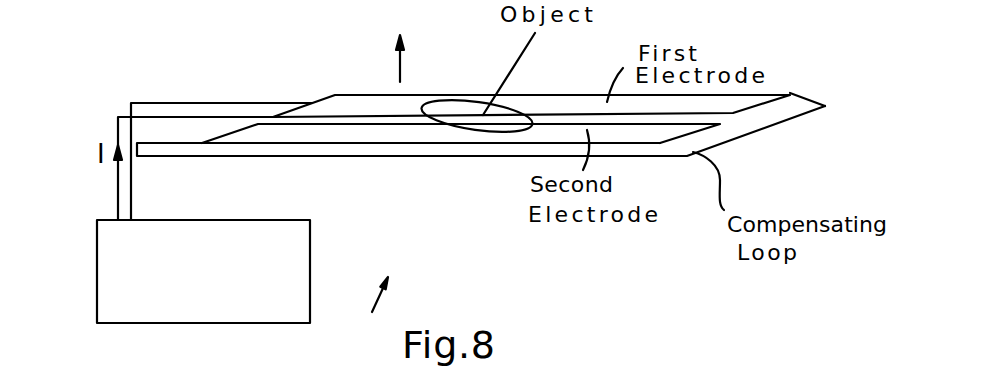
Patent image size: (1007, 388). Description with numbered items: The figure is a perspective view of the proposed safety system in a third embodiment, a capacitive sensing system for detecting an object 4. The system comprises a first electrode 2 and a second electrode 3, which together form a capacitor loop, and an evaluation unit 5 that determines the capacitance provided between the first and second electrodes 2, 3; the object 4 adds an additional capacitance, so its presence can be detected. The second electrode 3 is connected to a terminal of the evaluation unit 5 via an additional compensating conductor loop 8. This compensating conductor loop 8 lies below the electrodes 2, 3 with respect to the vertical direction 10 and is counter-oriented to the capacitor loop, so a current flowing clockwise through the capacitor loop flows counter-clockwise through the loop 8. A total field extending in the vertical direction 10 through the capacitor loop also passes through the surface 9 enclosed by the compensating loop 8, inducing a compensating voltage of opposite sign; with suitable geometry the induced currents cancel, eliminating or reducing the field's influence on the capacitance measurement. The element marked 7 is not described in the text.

The first electrode 2 is at (547, 97).
The second electrode 3 is at (693, 130).
The object 4 is at (447, 100).
The evaluation unit 5 is at (310, 277).
The direction arrow 7 is at (373, 304).
The compensating conductor loop 8 is at (806, 114).
The surface 9 is at (760, 122).
The vertical direction 10 is at (397, 72).